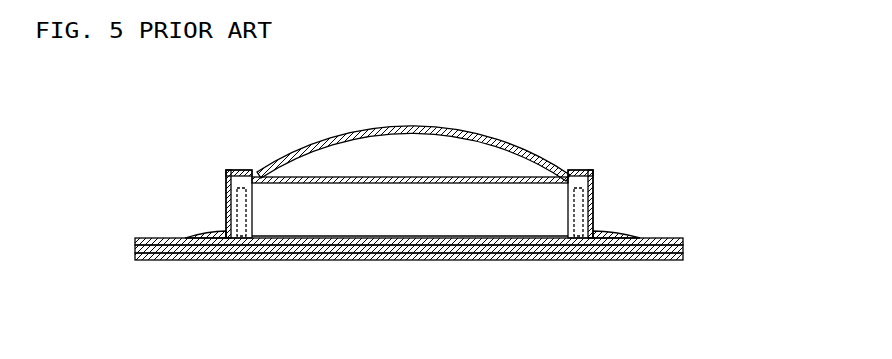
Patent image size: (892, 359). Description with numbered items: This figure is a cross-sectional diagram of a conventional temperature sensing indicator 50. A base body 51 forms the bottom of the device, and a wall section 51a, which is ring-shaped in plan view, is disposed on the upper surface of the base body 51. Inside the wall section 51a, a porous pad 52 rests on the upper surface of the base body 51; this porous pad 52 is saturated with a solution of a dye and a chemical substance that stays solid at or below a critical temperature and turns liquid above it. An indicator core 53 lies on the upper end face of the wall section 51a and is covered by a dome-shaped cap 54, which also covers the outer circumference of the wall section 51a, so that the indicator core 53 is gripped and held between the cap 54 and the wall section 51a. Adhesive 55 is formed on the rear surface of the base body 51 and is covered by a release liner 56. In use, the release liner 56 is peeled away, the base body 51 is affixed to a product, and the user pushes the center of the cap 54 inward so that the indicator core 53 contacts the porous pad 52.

The temperature sensing indicator 50 is at (736, 192).
The base body 51 is at (683, 246).
The wall section 51a is at (253, 212).
The porous pad 52 is at (386, 238).
The indicator core 53 is at (429, 177).
The cap 54 is at (416, 124).
The adhesive 55 is at (683, 256).
The release liner 56 is at (560, 261).